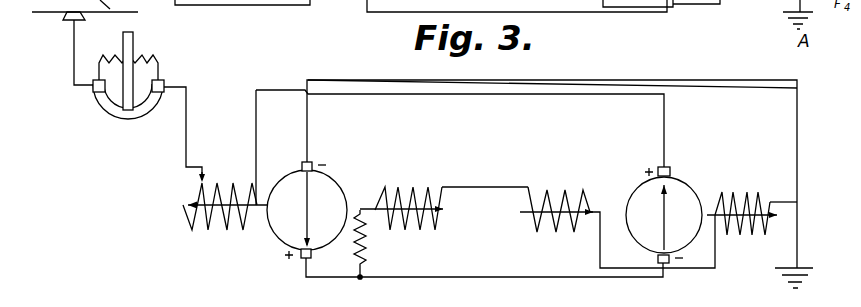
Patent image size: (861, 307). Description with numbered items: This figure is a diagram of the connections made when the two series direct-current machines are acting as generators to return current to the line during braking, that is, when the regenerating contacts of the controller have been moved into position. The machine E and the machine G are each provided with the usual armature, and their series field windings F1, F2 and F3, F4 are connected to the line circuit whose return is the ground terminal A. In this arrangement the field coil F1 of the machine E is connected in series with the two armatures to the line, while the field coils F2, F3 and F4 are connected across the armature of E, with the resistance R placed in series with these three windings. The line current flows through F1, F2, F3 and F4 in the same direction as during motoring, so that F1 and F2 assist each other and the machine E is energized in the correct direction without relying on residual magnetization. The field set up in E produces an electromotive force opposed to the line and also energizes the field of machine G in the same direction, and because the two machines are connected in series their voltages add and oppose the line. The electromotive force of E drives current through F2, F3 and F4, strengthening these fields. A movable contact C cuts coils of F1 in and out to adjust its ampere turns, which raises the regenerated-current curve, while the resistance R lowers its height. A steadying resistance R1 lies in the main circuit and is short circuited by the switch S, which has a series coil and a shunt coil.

The steadying resistance R1 is at (143, 57).
The switch S is at (130, 119).
The movable contact C is at (200, 178).
The series field winding F1 is at (225, 224).
The motor E is at (307, 210).
The resistance R is at (370, 243).
The series field winding F2 is at (401, 228).
The series field winding F3 is at (556, 228).
The motor G is at (664, 215).
The series field winding F4 is at (742, 233).
The terminal A is at (794, 287).